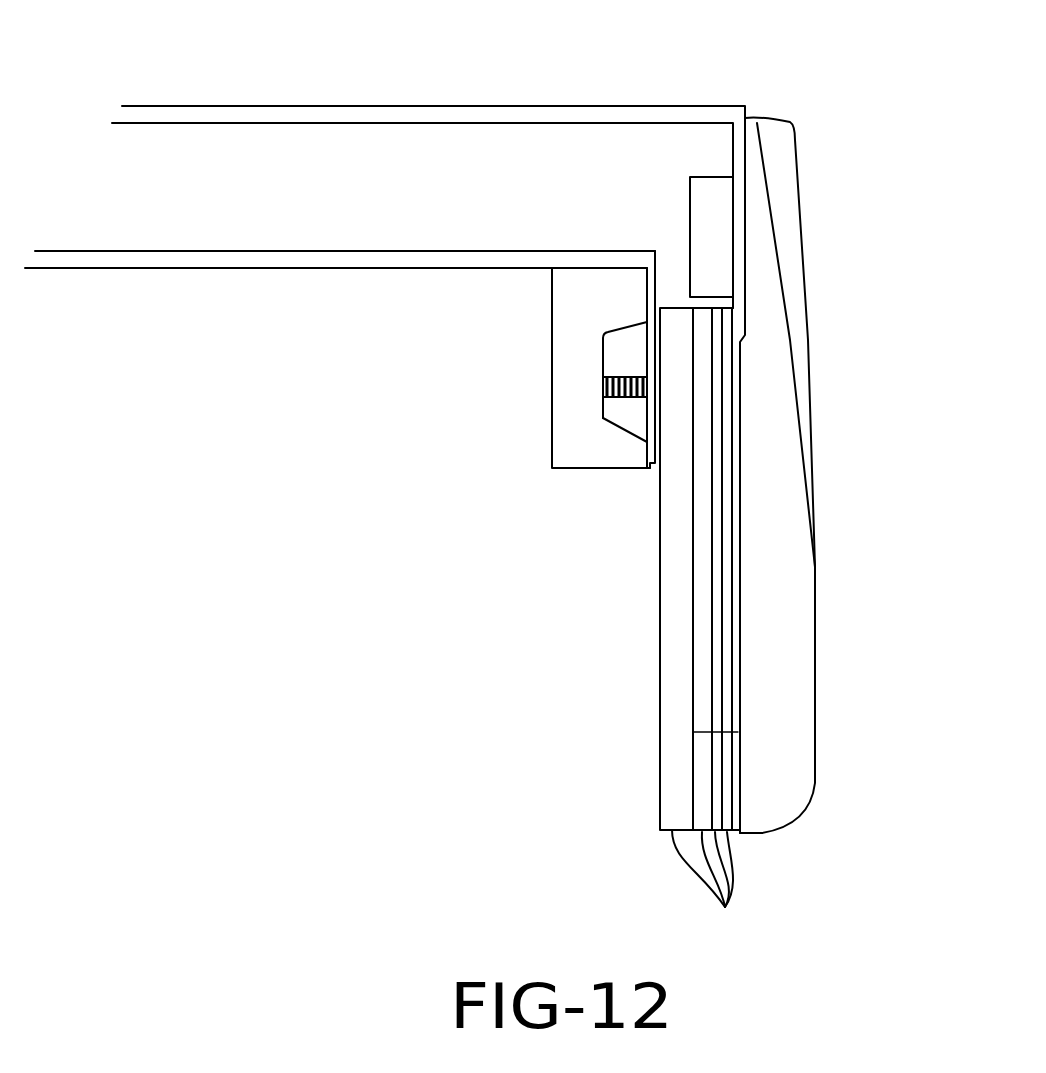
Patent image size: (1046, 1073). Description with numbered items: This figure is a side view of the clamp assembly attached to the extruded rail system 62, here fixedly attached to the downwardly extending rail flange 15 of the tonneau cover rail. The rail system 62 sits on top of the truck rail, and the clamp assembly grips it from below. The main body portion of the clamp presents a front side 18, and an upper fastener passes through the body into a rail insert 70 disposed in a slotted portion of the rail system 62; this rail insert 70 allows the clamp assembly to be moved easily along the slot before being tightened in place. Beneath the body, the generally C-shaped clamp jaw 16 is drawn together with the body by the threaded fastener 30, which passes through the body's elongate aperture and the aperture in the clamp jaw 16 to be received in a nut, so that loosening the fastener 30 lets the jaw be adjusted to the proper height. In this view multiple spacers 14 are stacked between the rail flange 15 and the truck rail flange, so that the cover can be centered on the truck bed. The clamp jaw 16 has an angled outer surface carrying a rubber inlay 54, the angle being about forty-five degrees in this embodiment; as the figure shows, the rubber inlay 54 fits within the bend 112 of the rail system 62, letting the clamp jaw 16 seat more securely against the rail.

The spacers 14 is at (702, 623).
The rail flange 15 is at (735, 282).
The clamp jaw 16 is at (558, 365).
The front side 18 is at (793, 204).
The threaded fastener 30 is at (627, 392).
The rubber inlay 54 is at (643, 317).
The rail system 62 is at (290, 338).
The rail insert 70 is at (713, 190).
The bend 112 is at (638, 257).